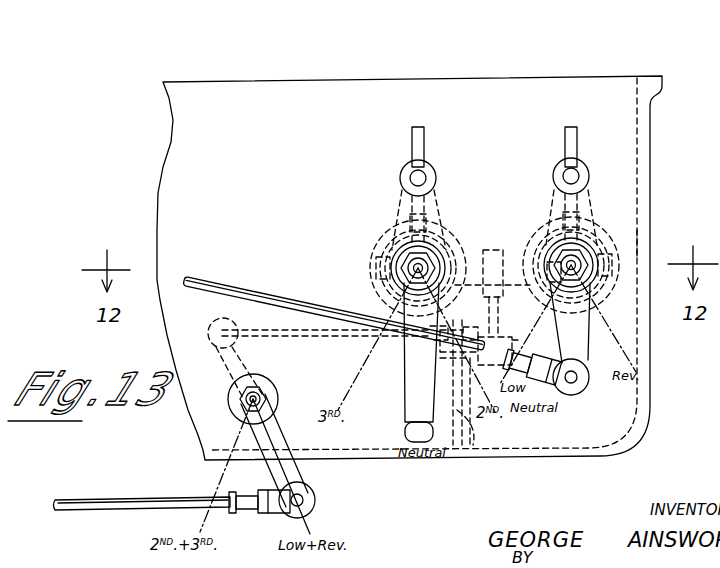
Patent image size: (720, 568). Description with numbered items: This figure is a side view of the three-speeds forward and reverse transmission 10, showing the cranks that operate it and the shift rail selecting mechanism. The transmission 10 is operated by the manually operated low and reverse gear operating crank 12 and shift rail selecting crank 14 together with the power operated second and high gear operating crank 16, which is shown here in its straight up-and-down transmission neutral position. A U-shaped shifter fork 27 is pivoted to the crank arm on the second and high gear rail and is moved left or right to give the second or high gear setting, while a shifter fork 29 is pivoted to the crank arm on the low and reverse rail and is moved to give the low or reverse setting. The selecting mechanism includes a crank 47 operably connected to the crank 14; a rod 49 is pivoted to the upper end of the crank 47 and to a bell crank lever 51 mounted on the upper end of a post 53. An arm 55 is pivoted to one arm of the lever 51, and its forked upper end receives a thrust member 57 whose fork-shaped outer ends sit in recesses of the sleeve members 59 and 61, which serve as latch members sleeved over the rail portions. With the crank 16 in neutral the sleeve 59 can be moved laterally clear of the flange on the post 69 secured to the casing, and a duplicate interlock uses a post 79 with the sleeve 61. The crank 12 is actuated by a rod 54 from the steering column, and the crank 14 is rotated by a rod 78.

The transmission 10 is at (520, 84).
The low and reverse gear operating crank 12 is at (577, 354).
The shift rail selecting crank 14 is at (274, 418).
The second and high gear operating crank 16 is at (408, 380).
The U-shaped shifter fork 27 is at (412, 143).
The shifter fork 29 is at (578, 142).
The crank 47 is at (238, 354).
The rod 49 is at (330, 334).
The bell crank lever 51 is at (458, 362).
The post 53 is at (472, 446).
The rod 54 is at (268, 294).
The arm 55 is at (500, 318).
The thrust member 57 is at (482, 246).
The sleeve member 59 is at (378, 236).
The sleeve member 61 is at (590, 232).
The post 69 is at (382, 276).
The rod 78 is at (110, 508).
The post 79 is at (618, 248).